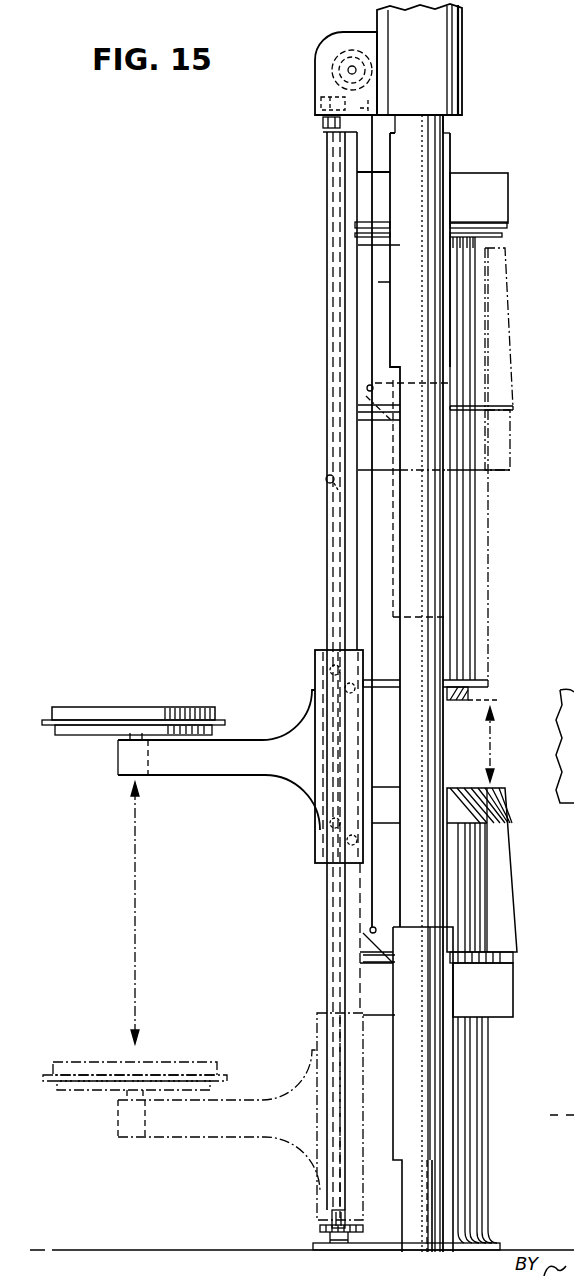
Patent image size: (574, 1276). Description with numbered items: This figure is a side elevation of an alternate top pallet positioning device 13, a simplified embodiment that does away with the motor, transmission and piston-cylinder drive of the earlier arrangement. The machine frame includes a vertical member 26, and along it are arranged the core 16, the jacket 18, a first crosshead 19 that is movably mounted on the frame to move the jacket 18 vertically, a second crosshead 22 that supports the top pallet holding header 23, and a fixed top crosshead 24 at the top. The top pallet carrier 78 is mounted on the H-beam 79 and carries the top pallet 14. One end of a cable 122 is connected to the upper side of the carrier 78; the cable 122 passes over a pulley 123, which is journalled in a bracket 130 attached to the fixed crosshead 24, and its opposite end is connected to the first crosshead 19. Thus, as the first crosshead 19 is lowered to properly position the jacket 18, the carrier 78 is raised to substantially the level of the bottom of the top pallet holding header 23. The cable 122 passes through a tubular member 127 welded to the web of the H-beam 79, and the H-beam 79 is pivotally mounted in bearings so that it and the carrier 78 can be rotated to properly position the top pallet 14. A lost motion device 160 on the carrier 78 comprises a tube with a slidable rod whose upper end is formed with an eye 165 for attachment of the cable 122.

The top pallet positioning device 13 is at (188, 775).
The top pallet 14 is at (80, 705).
The core 16 is at (452, 702).
The jacket 18 is at (488, 590).
The first crosshead 19 is at (504, 444).
The second crosshead 22 is at (502, 185).
The top pallet holding header 23 is at (470, 645).
The fixed top crosshead 24 is at (462, 42).
The vertical member 26 is at (424, 490).
The top pallet carrier 78 is at (312, 710).
The H-beam 79 is at (334, 297).
The cable 122 is at (372, 555).
The pulley 123 is at (330, 62).
The tubular member 127 is at (322, 114).
The bracket 130 is at (340, 36).
The lost motion device 160 is at (333, 787).
The eye 165 is at (327, 481).